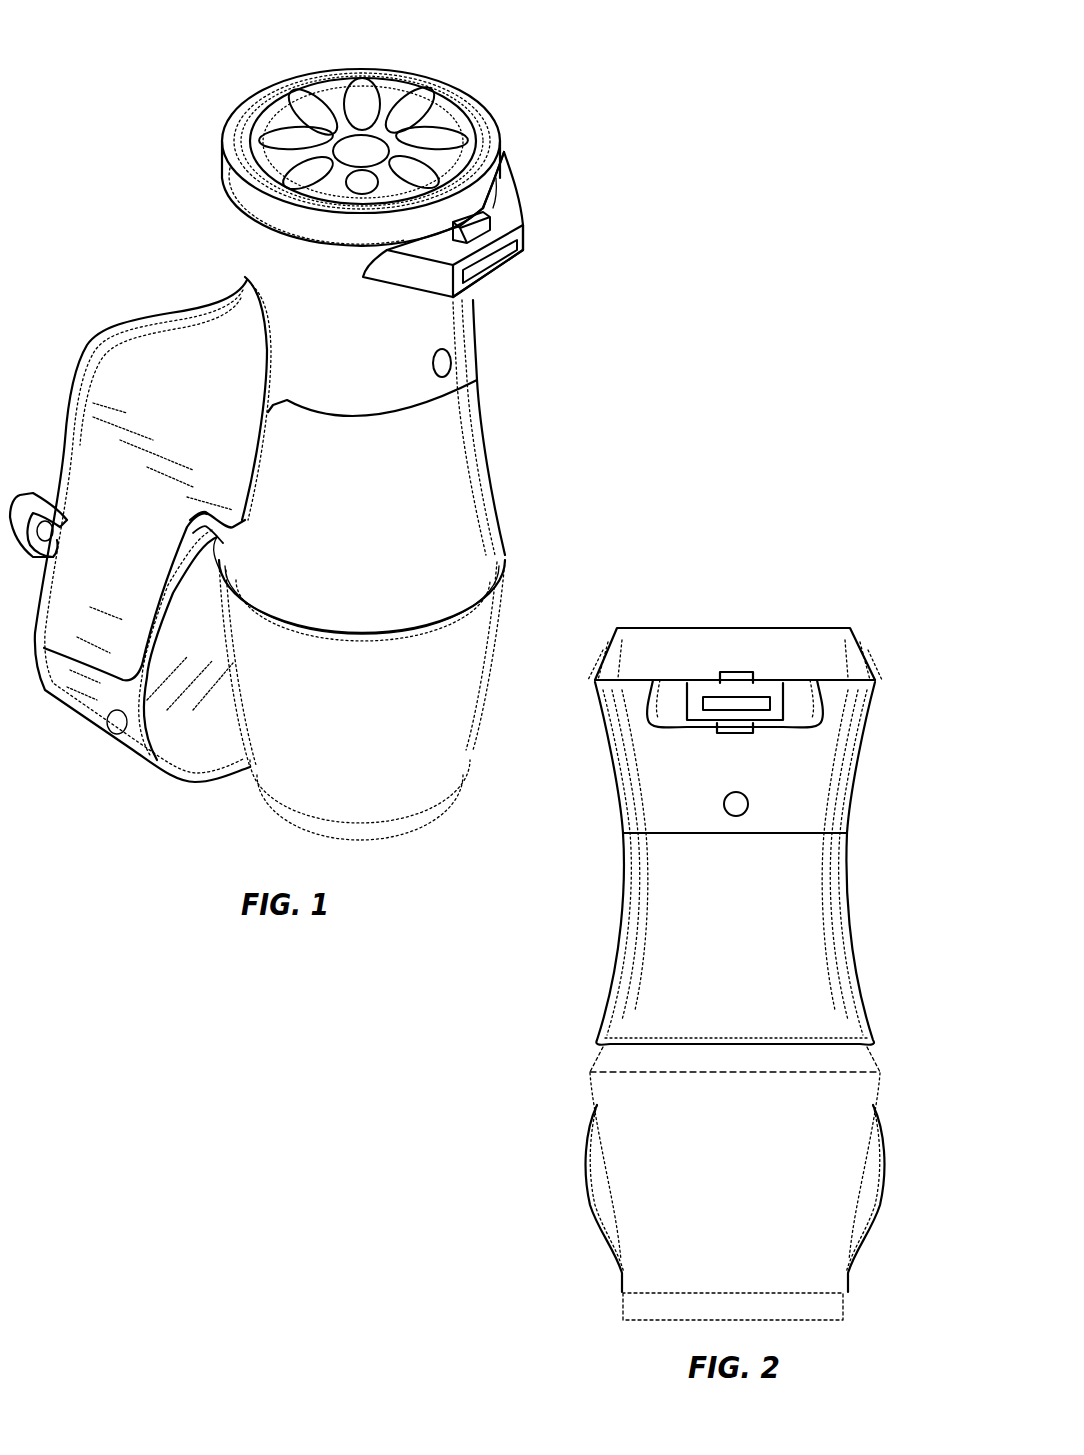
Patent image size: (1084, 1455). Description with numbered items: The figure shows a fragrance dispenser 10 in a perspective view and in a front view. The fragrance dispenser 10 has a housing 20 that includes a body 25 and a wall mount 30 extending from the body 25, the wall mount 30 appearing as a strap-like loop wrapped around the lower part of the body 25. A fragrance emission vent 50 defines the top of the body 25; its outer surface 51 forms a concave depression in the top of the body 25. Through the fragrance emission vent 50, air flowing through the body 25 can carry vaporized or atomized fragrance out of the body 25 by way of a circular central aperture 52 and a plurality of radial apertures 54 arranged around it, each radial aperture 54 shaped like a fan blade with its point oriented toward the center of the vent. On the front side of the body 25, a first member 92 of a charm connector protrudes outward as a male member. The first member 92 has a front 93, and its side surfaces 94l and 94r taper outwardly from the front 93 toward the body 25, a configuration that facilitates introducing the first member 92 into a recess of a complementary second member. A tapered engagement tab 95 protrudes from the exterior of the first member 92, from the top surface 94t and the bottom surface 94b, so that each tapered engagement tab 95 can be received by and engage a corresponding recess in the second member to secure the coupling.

In FIG. 1, the fragrance dispenser 10 is at (574, 98).
In FIG. 2, the fragrance dispenser 10 is at (866, 592).
In FIG. 1, the housing 20 is at (520, 348).
In FIG. 2, the housing 20 is at (514, 943).
In FIG. 1, the body 25 is at (465, 424).
In FIG. 2, the body 25 is at (637, 940).
In FIG. 1, the wall mount 30 is at (148, 346).
In FIG. 2, the wall mount 30 is at (593, 1140).
In FIG. 1, the fragrance emission vent 50 is at (385, 66).
In FIG. 1, the outer surface 51 is at (340, 98).
In FIG. 1, the central aperture 52 is at (352, 150).
In FIG. 1, the radial apertures 54 is at (250, 140).
In FIG. 1, the first member 92 is at (538, 203).
In FIG. 2, the first member 92 is at (797, 648).
In FIG. 1, the front 93 is at (526, 244).
In FIG. 2, the front 93 is at (767, 690).
In FIG. 1, the top surface 94t is at (503, 217).
In FIG. 2, the top surface 94t is at (673, 680).
In FIG. 1, the side surface 94l is at (430, 283).
In FIG. 2, the side surface 94l is at (663, 700).
In FIG. 1, the side surface 94r is at (527, 227).
In FIG. 2, the side surface 94r is at (807, 707).
In FIG. 1, the bottom surface 94b is at (495, 270).
In FIG. 2, the bottom surface 94b is at (783, 730).
In FIG. 1, the tapered engagement tab 95 is at (498, 180).
In FIG. 2, the tapered engagement tab 95 is at (740, 673).